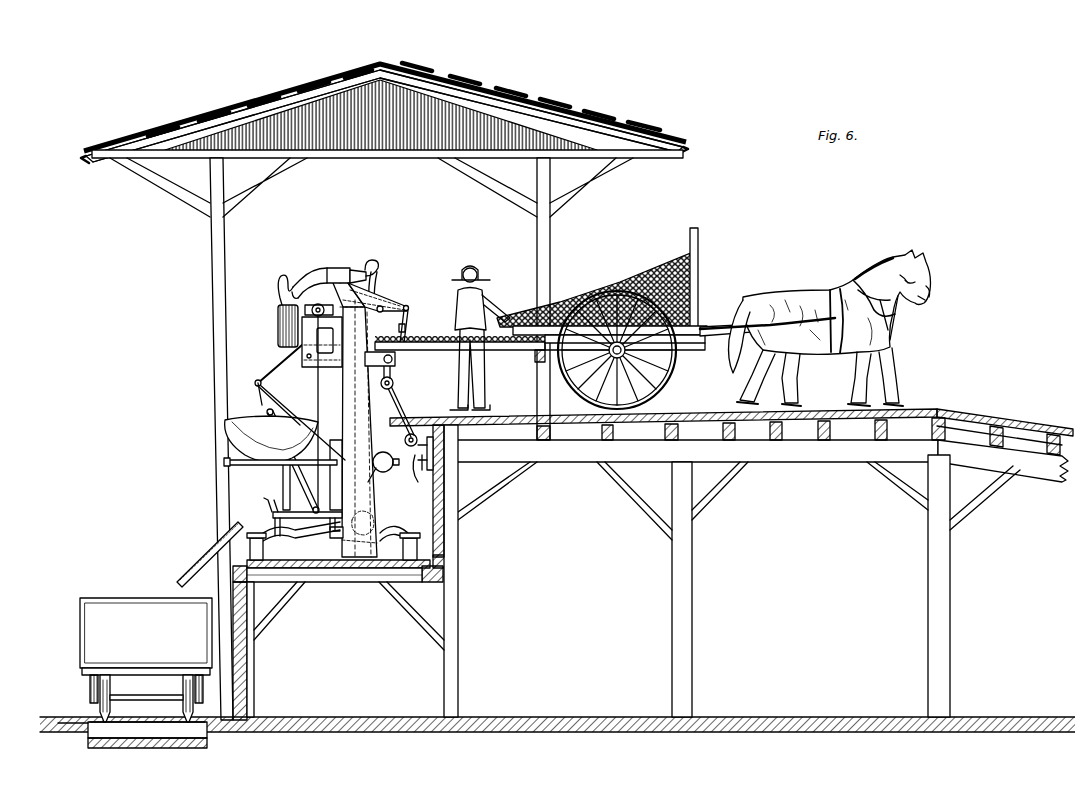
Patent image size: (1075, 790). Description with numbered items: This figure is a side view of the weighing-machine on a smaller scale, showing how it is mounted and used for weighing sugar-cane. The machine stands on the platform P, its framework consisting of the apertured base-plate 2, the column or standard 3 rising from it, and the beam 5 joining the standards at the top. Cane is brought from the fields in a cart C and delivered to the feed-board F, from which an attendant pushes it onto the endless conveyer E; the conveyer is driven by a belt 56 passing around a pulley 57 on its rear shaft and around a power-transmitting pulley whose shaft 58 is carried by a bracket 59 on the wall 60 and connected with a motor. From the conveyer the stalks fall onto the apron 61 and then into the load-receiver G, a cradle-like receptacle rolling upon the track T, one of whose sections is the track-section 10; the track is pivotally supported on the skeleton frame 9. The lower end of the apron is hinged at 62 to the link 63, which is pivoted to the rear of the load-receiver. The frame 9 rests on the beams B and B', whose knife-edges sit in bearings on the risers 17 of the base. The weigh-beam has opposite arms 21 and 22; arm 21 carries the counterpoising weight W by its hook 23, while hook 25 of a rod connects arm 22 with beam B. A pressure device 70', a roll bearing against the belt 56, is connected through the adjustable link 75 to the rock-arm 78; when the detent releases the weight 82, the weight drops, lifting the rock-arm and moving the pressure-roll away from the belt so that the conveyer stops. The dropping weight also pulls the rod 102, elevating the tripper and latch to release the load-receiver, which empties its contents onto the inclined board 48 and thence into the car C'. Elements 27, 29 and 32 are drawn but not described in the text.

The base-plate 2 is at (334, 547).
The column or standard 3 is at (360, 428).
The beam 5 is at (344, 275).
The skeleton frame or platform 9 is at (307, 488).
The track-section 10 is at (226, 466).
The risers 17 is at (250, 545).
The beam-arm 21 is at (307, 278).
The beam-arm 22 is at (358, 270).
The hook 23 is at (280, 283).
The hook 25 is at (380, 266).
The connecting rod 27 is at (282, 450).
The lever 29 is at (265, 501).
The weight ball 32 is at (388, 471).
The inclined board 48 is at (190, 548).
The belt 56 is at (399, 408).
The pulley or wheel 57 is at (413, 434).
The shaft 58 is at (430, 437).
The bracket 59 is at (416, 472).
The wall 60 is at (447, 490).
The apron or guide 61 is at (270, 372).
The hinge 62 is at (255, 384).
The link or belt 63 is at (268, 398).
The pressure device 70' is at (391, 370).
The link 75 is at (406, 320).
The rock-arm 78 is at (395, 305).
The gravity device or weight 82 is at (318, 303).
The rod 102 is at (310, 385).
The beam B is at (299, 541).
The beam B' is at (404, 528).
The cart C is at (605, 278).
The car C' is at (146, 660).
The endless conveyer E is at (322, 342).
The feed-board F is at (460, 351).
The load-receiver G is at (225, 425).
The platform P is at (322, 582).
The track or support T is at (281, 470).
The weight W is at (278, 322).